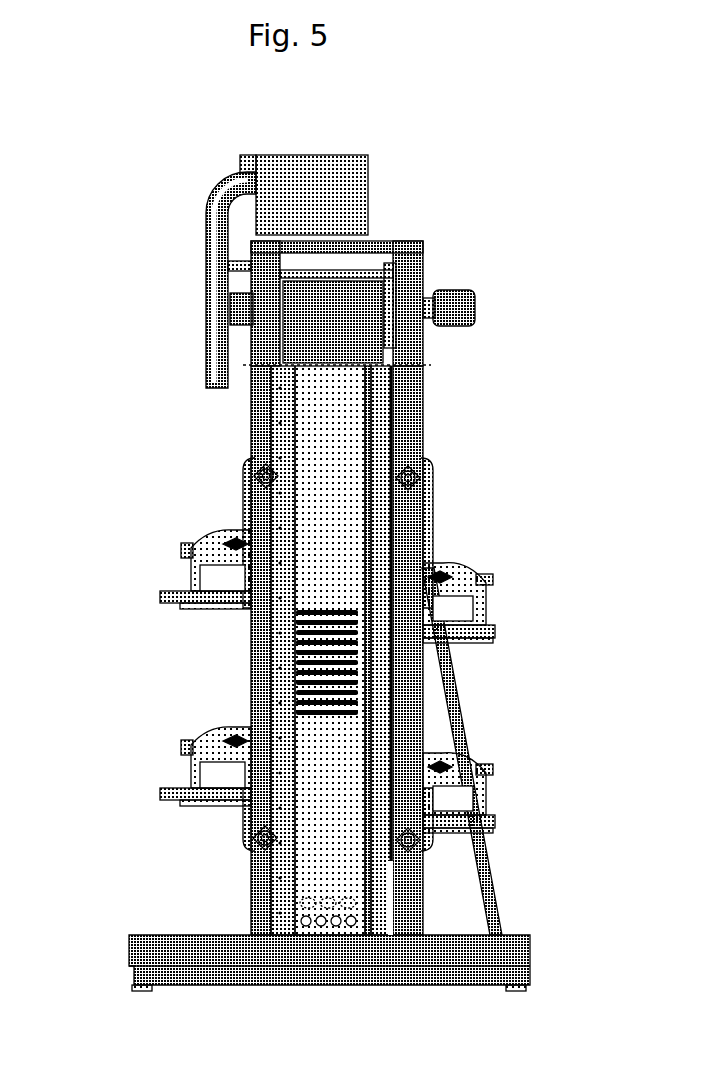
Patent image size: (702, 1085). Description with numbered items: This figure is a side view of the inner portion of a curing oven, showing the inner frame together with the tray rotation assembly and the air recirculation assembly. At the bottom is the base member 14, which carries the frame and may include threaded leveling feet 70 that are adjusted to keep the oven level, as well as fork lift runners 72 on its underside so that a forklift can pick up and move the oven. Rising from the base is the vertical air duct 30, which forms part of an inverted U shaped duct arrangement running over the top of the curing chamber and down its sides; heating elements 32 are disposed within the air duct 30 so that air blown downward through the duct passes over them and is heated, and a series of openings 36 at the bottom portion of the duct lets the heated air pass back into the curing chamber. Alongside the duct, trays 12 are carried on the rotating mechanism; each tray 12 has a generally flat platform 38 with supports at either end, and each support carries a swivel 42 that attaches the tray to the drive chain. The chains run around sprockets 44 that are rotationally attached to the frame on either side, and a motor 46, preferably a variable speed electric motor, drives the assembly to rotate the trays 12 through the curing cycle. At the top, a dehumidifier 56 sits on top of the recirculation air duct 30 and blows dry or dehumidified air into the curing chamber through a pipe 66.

The rotating tray 12 is at (215, 590).
The base member 14 is at (252, 943).
The air duct 30 is at (320, 437).
The heating element 32 is at (330, 700).
The air duct opening 36 is at (330, 907).
The platform 38 is at (178, 538).
The swivel 42 is at (262, 466).
The sprocket 44 is at (237, 455).
The motor 46 is at (465, 285).
The dehumidifier 56 is at (345, 165).
The pipe 66 is at (200, 215).
The threaded leveling foot 70 is at (125, 978).
The fork lift runner 72 is at (307, 977).